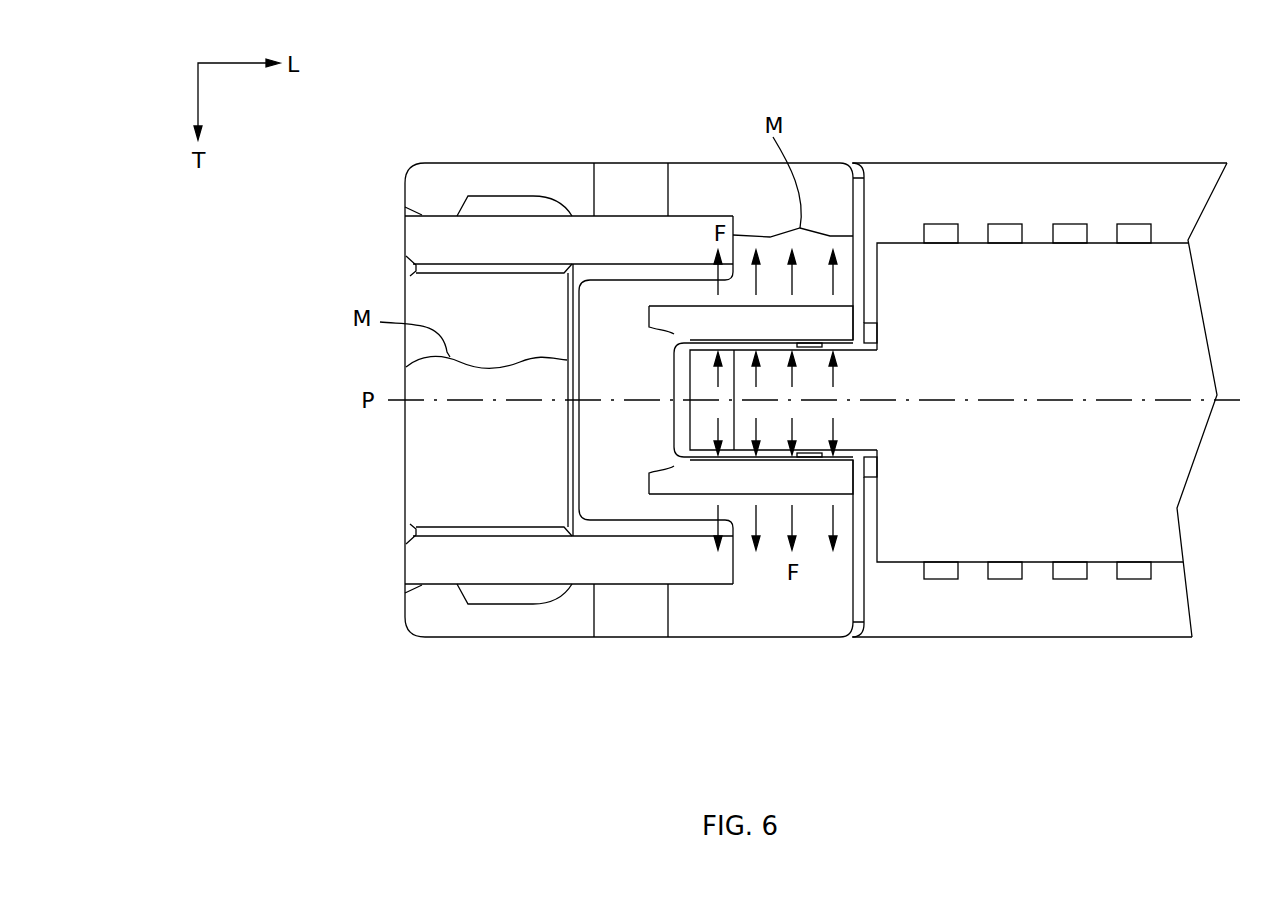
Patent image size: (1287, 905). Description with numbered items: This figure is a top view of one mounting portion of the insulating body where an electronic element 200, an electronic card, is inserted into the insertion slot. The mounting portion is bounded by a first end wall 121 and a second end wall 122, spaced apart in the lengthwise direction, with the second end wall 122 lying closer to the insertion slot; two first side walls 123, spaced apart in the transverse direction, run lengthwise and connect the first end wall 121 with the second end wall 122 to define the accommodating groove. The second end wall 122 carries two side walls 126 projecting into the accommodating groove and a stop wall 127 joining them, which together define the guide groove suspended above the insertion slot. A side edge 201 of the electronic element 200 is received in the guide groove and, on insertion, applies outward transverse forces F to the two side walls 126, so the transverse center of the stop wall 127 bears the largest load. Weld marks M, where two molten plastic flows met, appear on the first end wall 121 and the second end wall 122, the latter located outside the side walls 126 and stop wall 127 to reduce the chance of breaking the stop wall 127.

The first end wall 121 is at (432, 453).
The second end wall 122 is at (860, 265).
The first side wall 123 is at (518, 177).
The side wall 126 is at (712, 322).
The stop wall 127 is at (597, 455).
The electronic element 200 is at (980, 273).
The side edge 201 is at (853, 425).